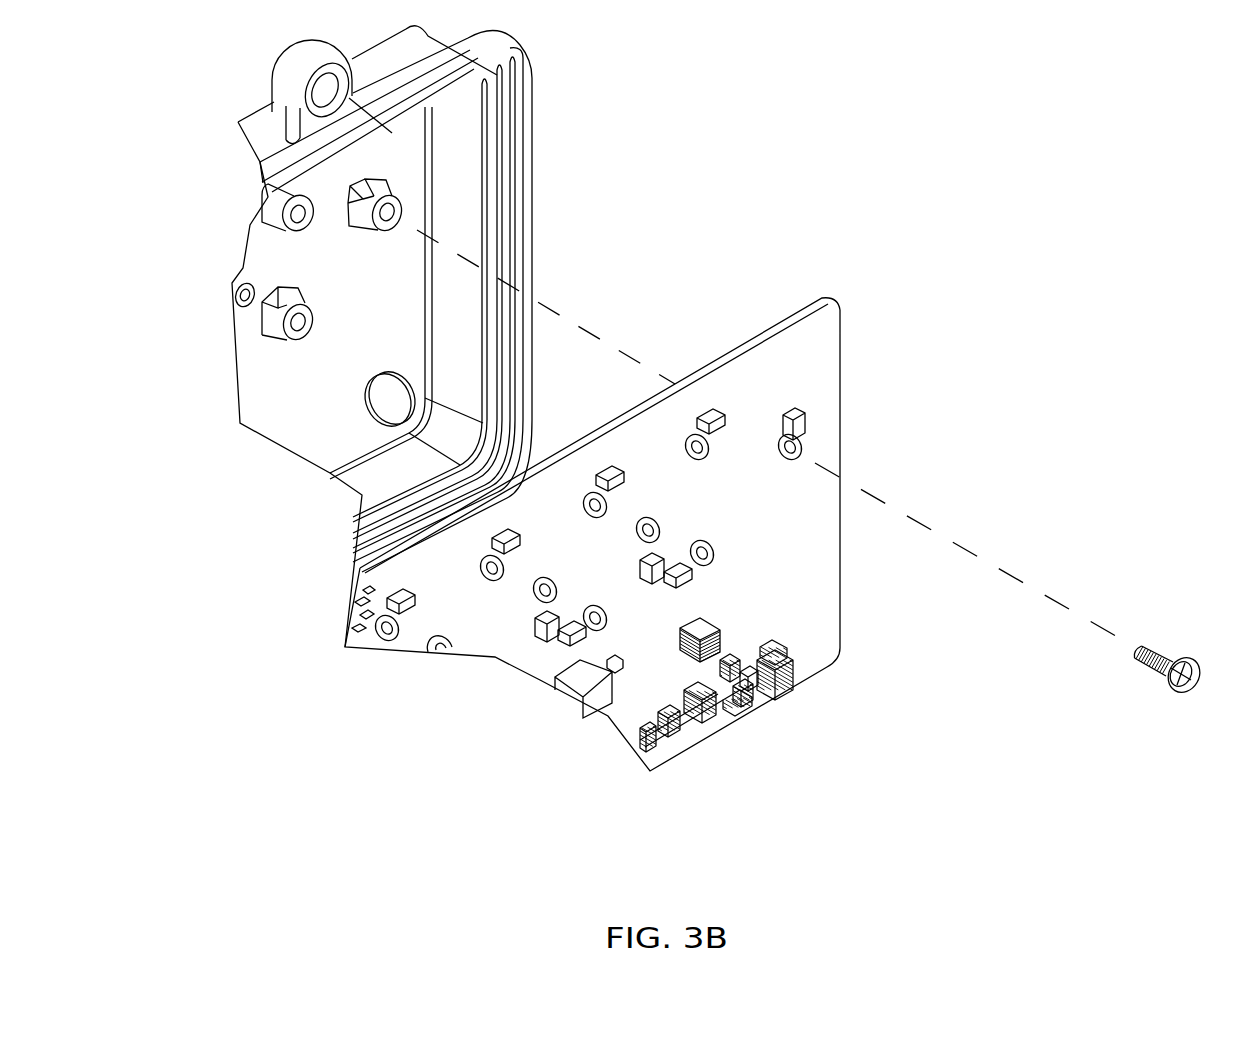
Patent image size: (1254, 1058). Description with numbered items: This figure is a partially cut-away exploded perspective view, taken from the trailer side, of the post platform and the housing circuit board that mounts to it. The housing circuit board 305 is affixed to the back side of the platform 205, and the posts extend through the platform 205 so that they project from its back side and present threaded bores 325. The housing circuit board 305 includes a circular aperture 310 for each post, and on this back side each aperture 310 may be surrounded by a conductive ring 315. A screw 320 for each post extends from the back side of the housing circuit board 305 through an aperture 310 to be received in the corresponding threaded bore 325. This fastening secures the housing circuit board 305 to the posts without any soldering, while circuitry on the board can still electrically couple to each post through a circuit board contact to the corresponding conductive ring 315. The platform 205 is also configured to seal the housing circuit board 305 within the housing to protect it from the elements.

The platform 205 is at (247, 387).
The housing circuit board 305 is at (820, 347).
The circular aperture 310 is at (717, 550).
The conductive ring 315 is at (808, 443).
The screw 320 is at (1160, 647).
The threaded bore 325 is at (376, 228).